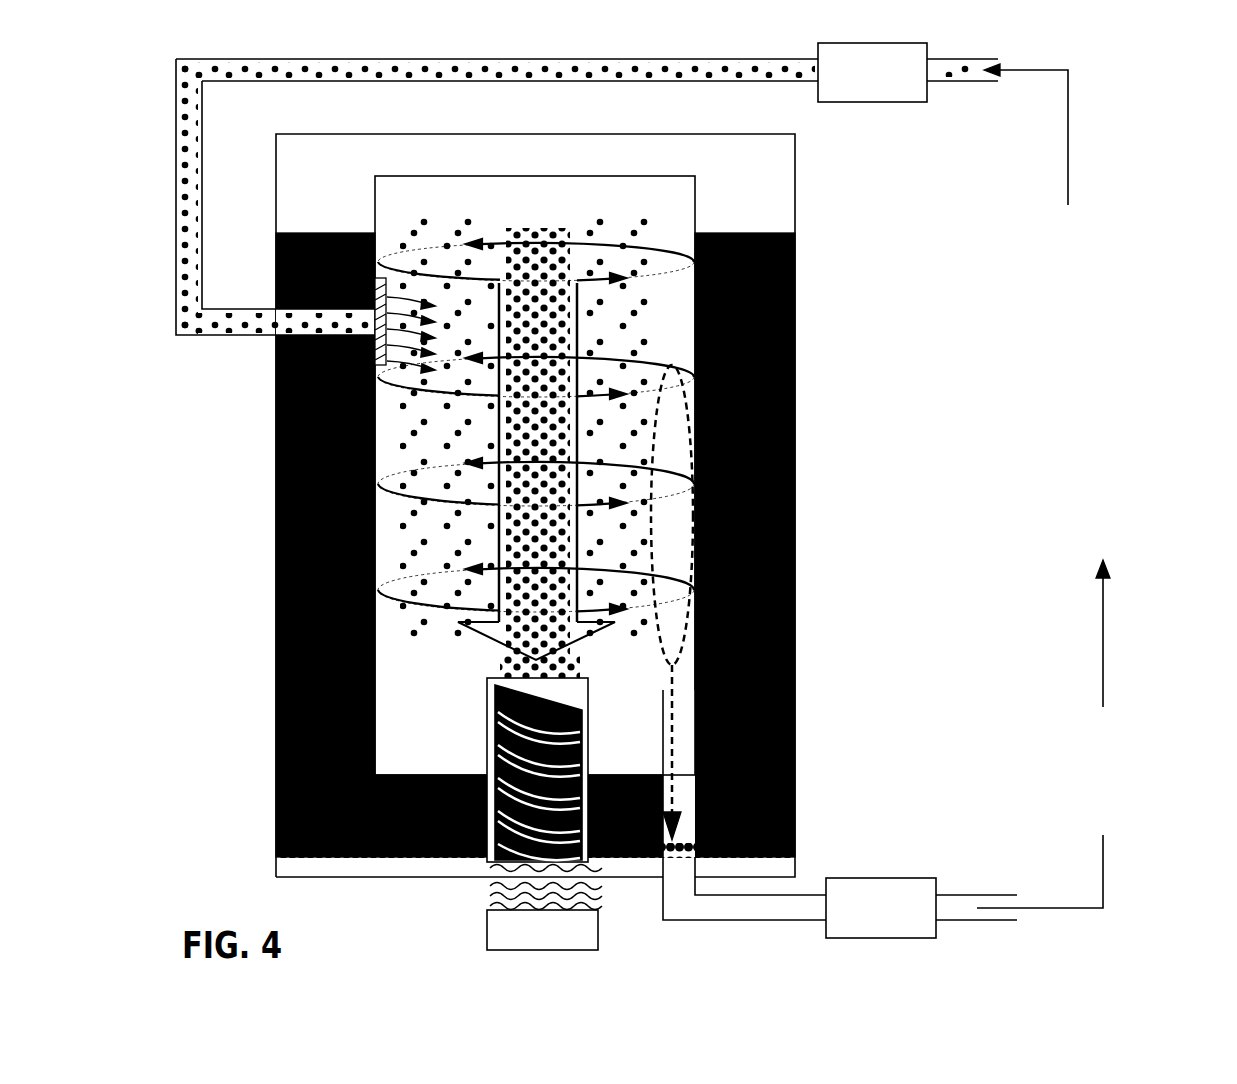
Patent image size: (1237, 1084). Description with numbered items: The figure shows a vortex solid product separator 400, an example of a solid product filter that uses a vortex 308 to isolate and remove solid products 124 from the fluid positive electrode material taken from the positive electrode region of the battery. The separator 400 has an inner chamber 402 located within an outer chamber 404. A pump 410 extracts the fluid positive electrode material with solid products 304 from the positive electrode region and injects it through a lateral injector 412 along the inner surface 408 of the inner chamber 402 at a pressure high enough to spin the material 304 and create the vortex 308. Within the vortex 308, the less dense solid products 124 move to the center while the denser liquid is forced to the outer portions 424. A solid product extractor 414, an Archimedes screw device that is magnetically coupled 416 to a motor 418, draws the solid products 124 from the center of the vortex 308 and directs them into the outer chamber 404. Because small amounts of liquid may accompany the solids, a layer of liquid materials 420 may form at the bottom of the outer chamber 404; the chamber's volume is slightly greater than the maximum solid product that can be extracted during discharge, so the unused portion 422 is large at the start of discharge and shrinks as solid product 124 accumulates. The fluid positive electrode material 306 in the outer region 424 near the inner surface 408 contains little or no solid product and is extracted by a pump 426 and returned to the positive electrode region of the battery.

The solid products 124 is at (605, 340).
The fluid positive electrode material with solid products 304 is at (1070, 150).
The fluid positive electrode material 306 is at (1103, 704).
The vortex 308 is at (640, 255).
The vortex solid product separator 400 is at (581, 505).
The inner chamber 402 is at (604, 176).
The outer chamber 404 is at (795, 217).
The inner surface 408 is at (380, 549).
The pump 410 is at (905, 102).
The lateral injector 412 is at (402, 262).
The solid product extractor 414 is at (495, 738).
The magnetic coupling 416 is at (482, 898).
The motor 418 is at (487, 935).
The layer of liquid materials 420 is at (320, 870).
The unused portion 422 is at (734, 174).
The outer portions of the vortex 424 is at (672, 712).
The pump 426 is at (883, 877).